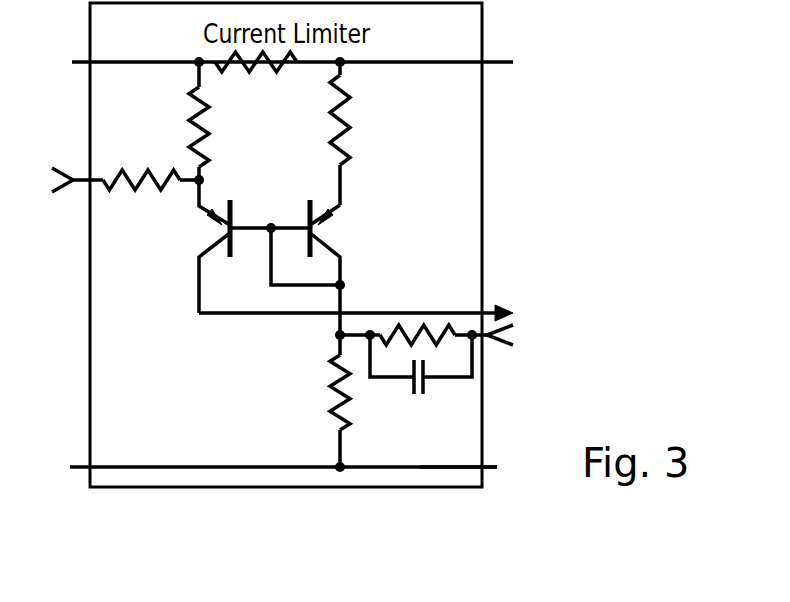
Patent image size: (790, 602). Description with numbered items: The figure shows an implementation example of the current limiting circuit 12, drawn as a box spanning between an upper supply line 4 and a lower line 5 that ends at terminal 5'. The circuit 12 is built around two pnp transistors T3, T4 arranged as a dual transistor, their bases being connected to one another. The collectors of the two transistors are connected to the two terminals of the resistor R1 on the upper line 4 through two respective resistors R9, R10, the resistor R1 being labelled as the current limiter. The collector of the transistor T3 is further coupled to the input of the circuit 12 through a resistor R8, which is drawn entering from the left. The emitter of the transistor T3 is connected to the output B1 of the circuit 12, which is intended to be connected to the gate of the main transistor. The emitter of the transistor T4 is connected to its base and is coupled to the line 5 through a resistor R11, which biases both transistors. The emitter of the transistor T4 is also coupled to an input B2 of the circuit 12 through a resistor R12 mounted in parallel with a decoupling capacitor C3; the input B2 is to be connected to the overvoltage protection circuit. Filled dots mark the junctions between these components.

The supply line 4 is at (77, 60).
The line 5 is at (280, 501).
The line terminal 5' is at (466, 503).
The current limiting circuit 12 is at (318, 488).
The resistor R1 is at (258, 73).
The resistor R8 is at (135, 172).
The resistor R9 is at (190, 130).
The resistor R10 is at (347, 118).
The resistor R11 is at (328, 400).
The resistor R12 is at (412, 325).
The pnp transistor T3 is at (232, 212).
The pnp transistor T4 is at (322, 212).
The decoupling capacitor C3 is at (428, 390).
The output B1 is at (368, 302).
The input B2 is at (512, 340).